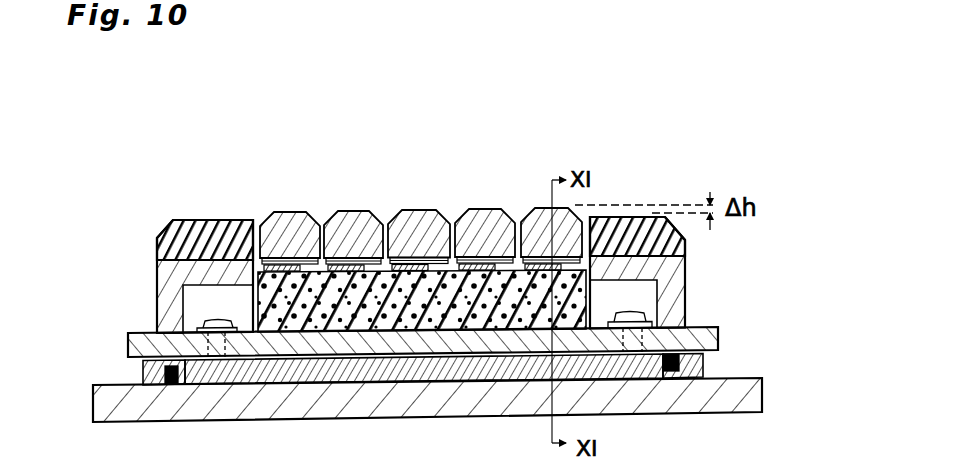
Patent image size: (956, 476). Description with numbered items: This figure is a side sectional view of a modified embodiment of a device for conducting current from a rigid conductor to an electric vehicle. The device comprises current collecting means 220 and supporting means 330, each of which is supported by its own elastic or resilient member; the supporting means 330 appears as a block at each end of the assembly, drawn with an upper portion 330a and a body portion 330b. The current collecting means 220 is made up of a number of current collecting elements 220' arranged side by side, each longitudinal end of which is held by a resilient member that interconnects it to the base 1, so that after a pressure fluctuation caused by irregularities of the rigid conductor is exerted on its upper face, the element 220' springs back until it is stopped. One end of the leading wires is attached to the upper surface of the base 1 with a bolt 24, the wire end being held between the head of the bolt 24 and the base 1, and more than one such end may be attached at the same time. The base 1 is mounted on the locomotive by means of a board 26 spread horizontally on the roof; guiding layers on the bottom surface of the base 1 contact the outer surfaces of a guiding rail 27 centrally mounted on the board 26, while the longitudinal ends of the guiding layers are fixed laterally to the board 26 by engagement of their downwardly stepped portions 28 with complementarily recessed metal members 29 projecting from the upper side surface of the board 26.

The base 1 is at (700, 335).
The bolt 24 is at (208, 321).
The board 26 is at (385, 400).
The guiding rail 27 is at (318, 368).
The downwardly stepped portions 28 is at (669, 375).
The recessed members 29 is at (143, 373).
The current collecting means 220 is at (422, 214).
The current collecting element 220' is at (421, 213).
The supporting means 330 is at (255, 145).
The supporting means upper portion 330a is at (200, 222).
The supporting means body portion 330b is at (157, 272).